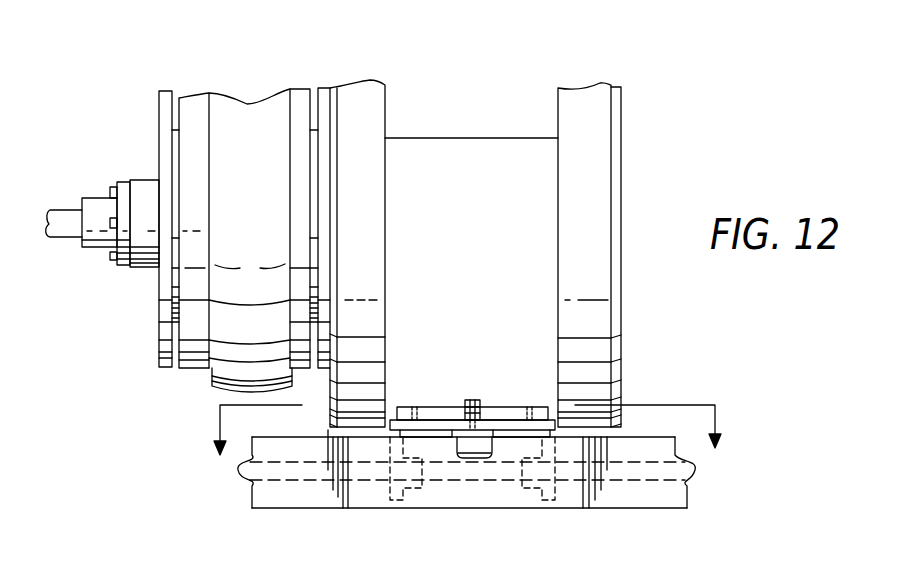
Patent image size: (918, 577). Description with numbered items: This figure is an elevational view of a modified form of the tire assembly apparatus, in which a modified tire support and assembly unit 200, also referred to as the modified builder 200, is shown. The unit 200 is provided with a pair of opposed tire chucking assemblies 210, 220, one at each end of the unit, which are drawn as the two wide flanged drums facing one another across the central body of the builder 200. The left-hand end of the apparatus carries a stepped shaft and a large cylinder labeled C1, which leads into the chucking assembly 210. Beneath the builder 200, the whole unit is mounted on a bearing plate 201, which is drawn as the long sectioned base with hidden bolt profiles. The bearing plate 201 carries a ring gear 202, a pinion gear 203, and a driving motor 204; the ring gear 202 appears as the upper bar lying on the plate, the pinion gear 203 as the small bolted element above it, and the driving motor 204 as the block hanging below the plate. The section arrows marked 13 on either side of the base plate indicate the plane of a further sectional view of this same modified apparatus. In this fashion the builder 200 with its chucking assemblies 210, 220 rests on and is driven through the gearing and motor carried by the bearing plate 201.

The roll core / cylinder C1 is at (242, 112).
The tire chucking assembly 210 is at (326, 69).
The tire support and assembly unit 200 is at (527, 75).
The tire chucking assembly 220 is at (637, 108).
The bearing plate 201 is at (507, 411).
The ring gear 202 is at (435, 416).
The pinion gear 203 is at (477, 402).
The driving motor 204 is at (468, 450).
The section line 13- 13 is at (468, 448).